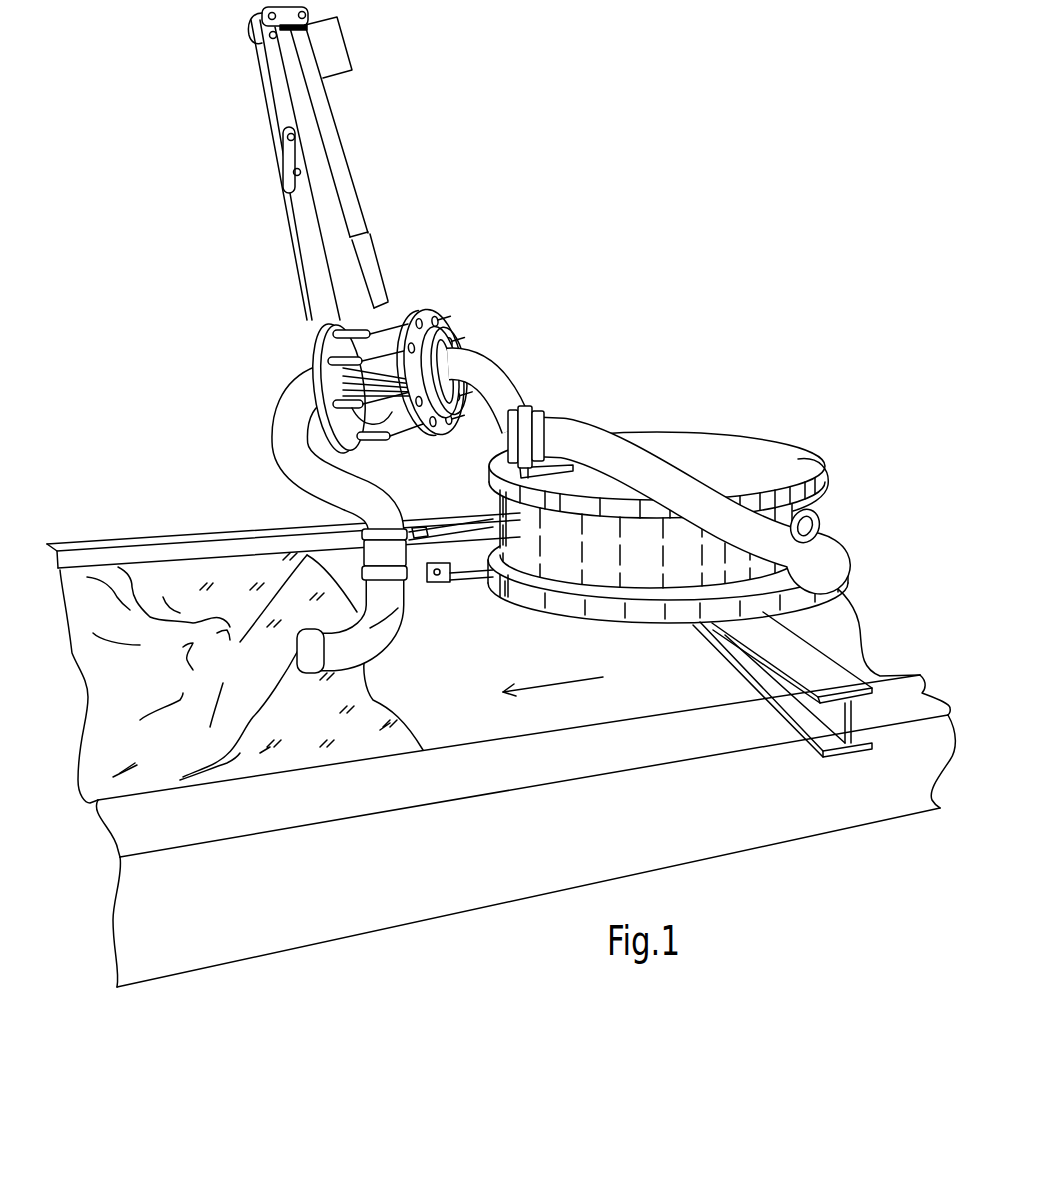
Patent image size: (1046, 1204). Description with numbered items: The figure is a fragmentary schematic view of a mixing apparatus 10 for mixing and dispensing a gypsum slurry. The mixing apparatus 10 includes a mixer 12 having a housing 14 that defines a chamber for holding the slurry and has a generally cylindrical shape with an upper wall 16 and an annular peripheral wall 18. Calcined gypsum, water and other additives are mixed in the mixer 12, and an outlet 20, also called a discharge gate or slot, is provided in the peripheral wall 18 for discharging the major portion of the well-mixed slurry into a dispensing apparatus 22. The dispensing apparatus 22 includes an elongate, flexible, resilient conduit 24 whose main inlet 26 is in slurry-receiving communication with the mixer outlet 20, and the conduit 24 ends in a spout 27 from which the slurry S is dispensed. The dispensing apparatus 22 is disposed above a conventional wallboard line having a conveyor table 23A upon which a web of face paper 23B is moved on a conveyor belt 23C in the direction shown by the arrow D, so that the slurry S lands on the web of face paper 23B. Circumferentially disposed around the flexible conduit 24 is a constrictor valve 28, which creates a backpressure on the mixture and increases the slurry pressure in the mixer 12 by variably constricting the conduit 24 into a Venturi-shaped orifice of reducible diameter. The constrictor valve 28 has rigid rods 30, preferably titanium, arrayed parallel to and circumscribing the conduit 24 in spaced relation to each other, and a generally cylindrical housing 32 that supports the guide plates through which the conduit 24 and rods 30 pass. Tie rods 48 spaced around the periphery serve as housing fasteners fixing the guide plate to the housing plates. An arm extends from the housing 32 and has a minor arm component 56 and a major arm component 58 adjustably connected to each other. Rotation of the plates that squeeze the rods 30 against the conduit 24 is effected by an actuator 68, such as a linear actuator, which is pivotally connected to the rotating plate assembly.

The mixing apparatus 10 is at (740, 197).
The mixer 12 is at (803, 417).
The housing 14 is at (680, 443).
The upper wall 16 is at (715, 458).
The annular peripheral wall 18 is at (793, 456).
The outlet 20 is at (820, 507).
The dispensing apparatus 22 is at (827, 547).
The conveyor table 23A is at (243, 907).
The web of face paper 23B is at (368, 745).
The conveyor belt or web 23C is at (470, 727).
The conduit 24 is at (497, 373).
The main inlet 26 is at (823, 525).
The outlet or spout 27 is at (347, 634).
The constrictor valve 28 is at (483, 233).
The rigid rods 30 is at (340, 383).
The housing 32 is at (473, 323).
The tie rods 48 is at (398, 318).
The minor arm component 56 is at (278, 91).
The major arm component 58 is at (315, 260).
The actuator 68 is at (337, 148).
The slurry S is at (137, 617).
The direction of travel D is at (567, 679).